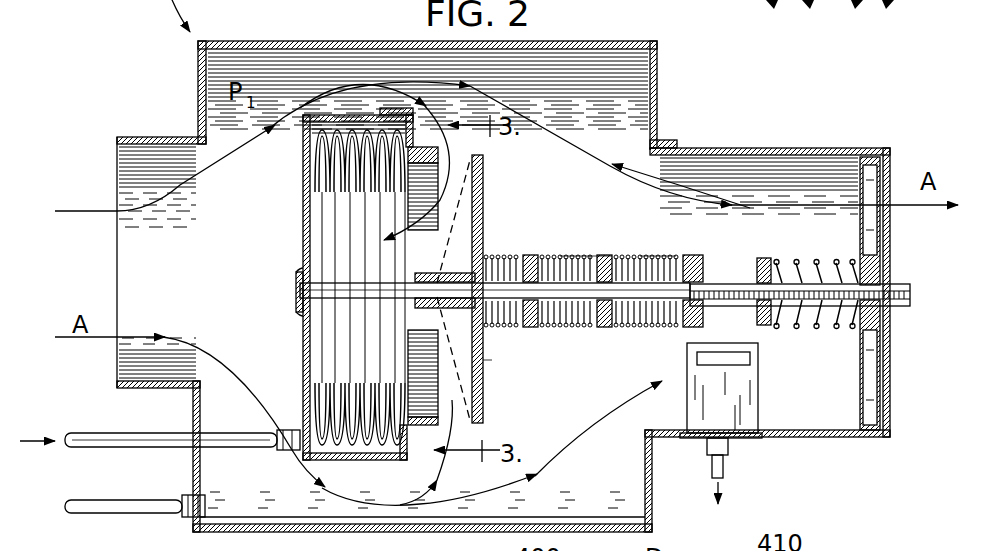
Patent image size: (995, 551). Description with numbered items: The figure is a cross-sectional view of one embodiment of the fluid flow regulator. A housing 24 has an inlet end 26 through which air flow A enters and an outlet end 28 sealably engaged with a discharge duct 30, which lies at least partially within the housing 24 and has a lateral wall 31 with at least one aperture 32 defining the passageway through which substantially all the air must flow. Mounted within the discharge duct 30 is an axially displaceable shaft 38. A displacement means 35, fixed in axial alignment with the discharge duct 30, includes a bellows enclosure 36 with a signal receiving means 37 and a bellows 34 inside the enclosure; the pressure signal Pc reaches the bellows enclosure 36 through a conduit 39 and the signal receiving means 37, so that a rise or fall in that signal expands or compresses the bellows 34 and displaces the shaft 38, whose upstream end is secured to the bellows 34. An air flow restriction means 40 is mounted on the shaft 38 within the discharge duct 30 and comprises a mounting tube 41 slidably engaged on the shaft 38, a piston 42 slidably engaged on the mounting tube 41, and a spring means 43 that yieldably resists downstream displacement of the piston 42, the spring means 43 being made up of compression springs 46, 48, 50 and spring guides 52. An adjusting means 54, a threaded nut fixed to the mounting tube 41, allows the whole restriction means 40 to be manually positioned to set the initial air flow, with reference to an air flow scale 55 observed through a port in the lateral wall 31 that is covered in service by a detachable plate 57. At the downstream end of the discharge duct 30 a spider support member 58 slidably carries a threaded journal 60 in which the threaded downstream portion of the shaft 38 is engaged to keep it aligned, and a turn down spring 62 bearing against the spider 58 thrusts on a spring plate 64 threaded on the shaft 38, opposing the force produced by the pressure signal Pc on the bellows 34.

The housing 24 is at (270, 41).
The inlet end 26 is at (152, 137).
The outlet end 28 is at (660, 124).
The discharge duct 30 is at (810, 144).
The lateral wall 31 is at (738, 148).
The aperture 32 is at (484, 262).
The bellows 34 is at (335, 375).
The displacement means 35 is at (300, 224).
The bellows enclosure 36 is at (300, 248).
The signal receiving means 37 is at (286, 452).
The shaft 38 is at (345, 290).
The conduit 39 is at (128, 440).
The air flow restriction means 40 is at (565, 333).
The mounting tube 41 is at (578, 257).
The piston 42 is at (486, 198).
The spring means 43 is at (600, 246).
The compression spring 46 is at (485, 380).
The compression spring 48 is at (584, 327).
The compression spring 50 is at (656, 257).
The spring guides 52 is at (538, 330).
The adjusting means 54 is at (710, 258).
The air flow scale 55 is at (740, 365).
The plate 57 is at (736, 448).
The spider support member 58 is at (870, 185).
The threaded journal 60 is at (797, 262).
The turn down spring 62 is at (818, 327).
The spring plate 64 is at (760, 260).